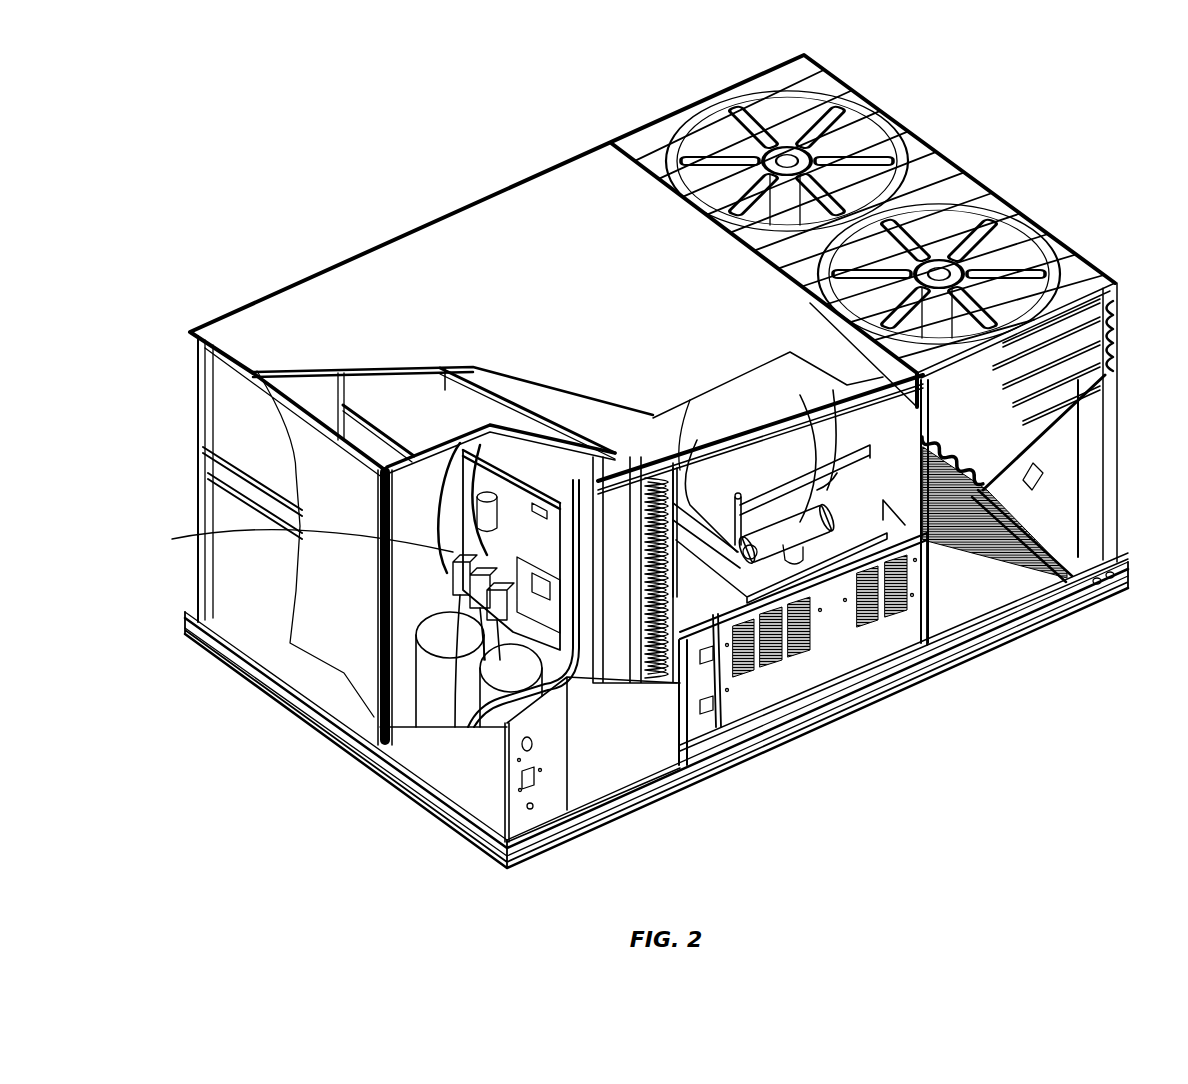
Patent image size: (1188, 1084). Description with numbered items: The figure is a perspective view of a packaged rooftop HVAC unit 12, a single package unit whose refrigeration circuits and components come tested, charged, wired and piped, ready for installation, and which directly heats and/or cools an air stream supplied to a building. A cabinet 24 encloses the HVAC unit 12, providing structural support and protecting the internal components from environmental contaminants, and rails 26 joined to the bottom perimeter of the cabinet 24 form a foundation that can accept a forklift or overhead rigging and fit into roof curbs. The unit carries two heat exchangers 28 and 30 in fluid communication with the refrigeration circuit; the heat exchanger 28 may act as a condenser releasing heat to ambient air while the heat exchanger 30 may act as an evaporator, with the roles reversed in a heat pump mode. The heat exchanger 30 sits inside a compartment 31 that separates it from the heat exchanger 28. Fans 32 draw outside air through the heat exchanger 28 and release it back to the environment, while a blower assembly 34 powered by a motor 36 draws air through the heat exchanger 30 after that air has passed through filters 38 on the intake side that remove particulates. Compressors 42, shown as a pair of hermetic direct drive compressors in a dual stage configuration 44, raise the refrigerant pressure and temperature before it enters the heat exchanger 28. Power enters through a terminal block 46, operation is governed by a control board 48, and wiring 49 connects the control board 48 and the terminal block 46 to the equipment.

The HVAC unit 12 is at (654, 461).
The cabinet 24 is at (235, 580).
The rails 26 is at (261, 691).
The heat exchanger 28 is at (1117, 322).
The heat exchanger 30 is at (658, 678).
The compartment 31 is at (697, 440).
The fans 32 is at (949, 261).
The blower assembly 34 is at (832, 473).
The motor 36 is at (797, 520).
The filters 38 is at (625, 465).
The compressors 42 is at (422, 687).
The dual stage configuration 44 is at (421, 621).
The terminal block 46 is at (478, 558).
The control board 48 is at (537, 477).
The wiring 49 is at (636, 440).